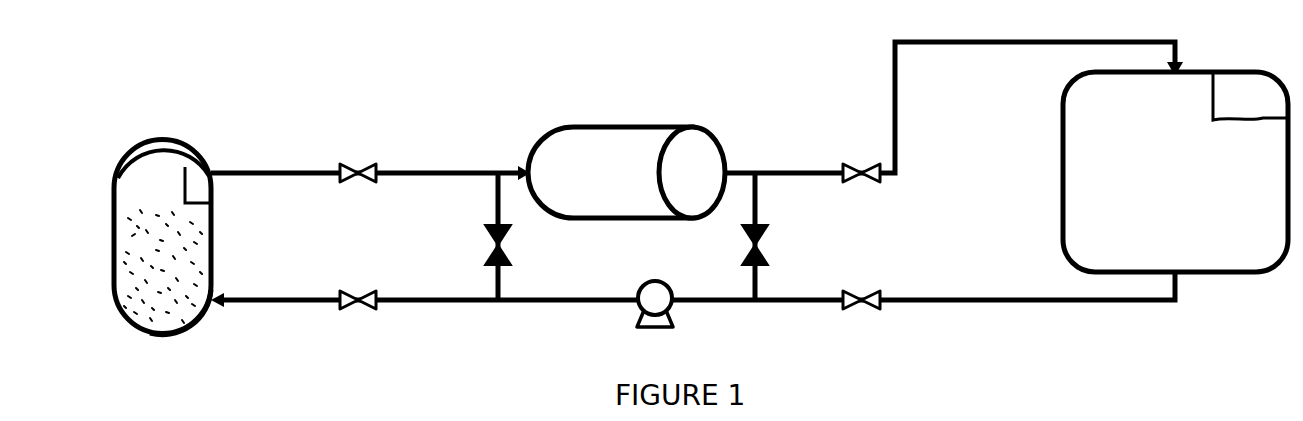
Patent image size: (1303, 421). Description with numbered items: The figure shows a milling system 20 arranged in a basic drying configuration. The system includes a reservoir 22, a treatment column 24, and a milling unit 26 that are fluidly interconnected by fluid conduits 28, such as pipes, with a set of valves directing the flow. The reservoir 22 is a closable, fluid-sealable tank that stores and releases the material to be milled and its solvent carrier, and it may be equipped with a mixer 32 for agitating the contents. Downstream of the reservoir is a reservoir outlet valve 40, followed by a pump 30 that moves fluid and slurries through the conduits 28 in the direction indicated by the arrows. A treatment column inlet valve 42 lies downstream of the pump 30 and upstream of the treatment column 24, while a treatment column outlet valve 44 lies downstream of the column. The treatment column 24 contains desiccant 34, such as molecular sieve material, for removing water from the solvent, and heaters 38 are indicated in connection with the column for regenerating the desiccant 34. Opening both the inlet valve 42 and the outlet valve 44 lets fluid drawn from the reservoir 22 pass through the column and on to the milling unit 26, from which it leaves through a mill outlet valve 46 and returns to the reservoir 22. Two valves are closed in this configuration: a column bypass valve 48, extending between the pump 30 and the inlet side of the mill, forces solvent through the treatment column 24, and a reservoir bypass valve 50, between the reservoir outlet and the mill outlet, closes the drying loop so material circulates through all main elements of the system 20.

The milling system 20 is at (828, 41).
The reservoir 22 is at (1208, 265).
The treatment column 24 is at (208, 260).
The milling unit 26 is at (616, 136).
The fluid conduits 28 is at (964, 312).
The pump 30 is at (672, 328).
The mixer 32 is at (1242, 84).
The desiccant 34 is at (193, 188).
The heaters 38 is at (196, 330).
The reservoir outlet valve 40 is at (870, 312).
The treatment column inlet valve 42 is at (368, 312).
The treatment column outlet valve 44 is at (372, 160).
The mill outlet valve 46 is at (863, 166).
The column bypass valve 48 is at (508, 252).
The reservoir bypass valve 50 is at (766, 252).